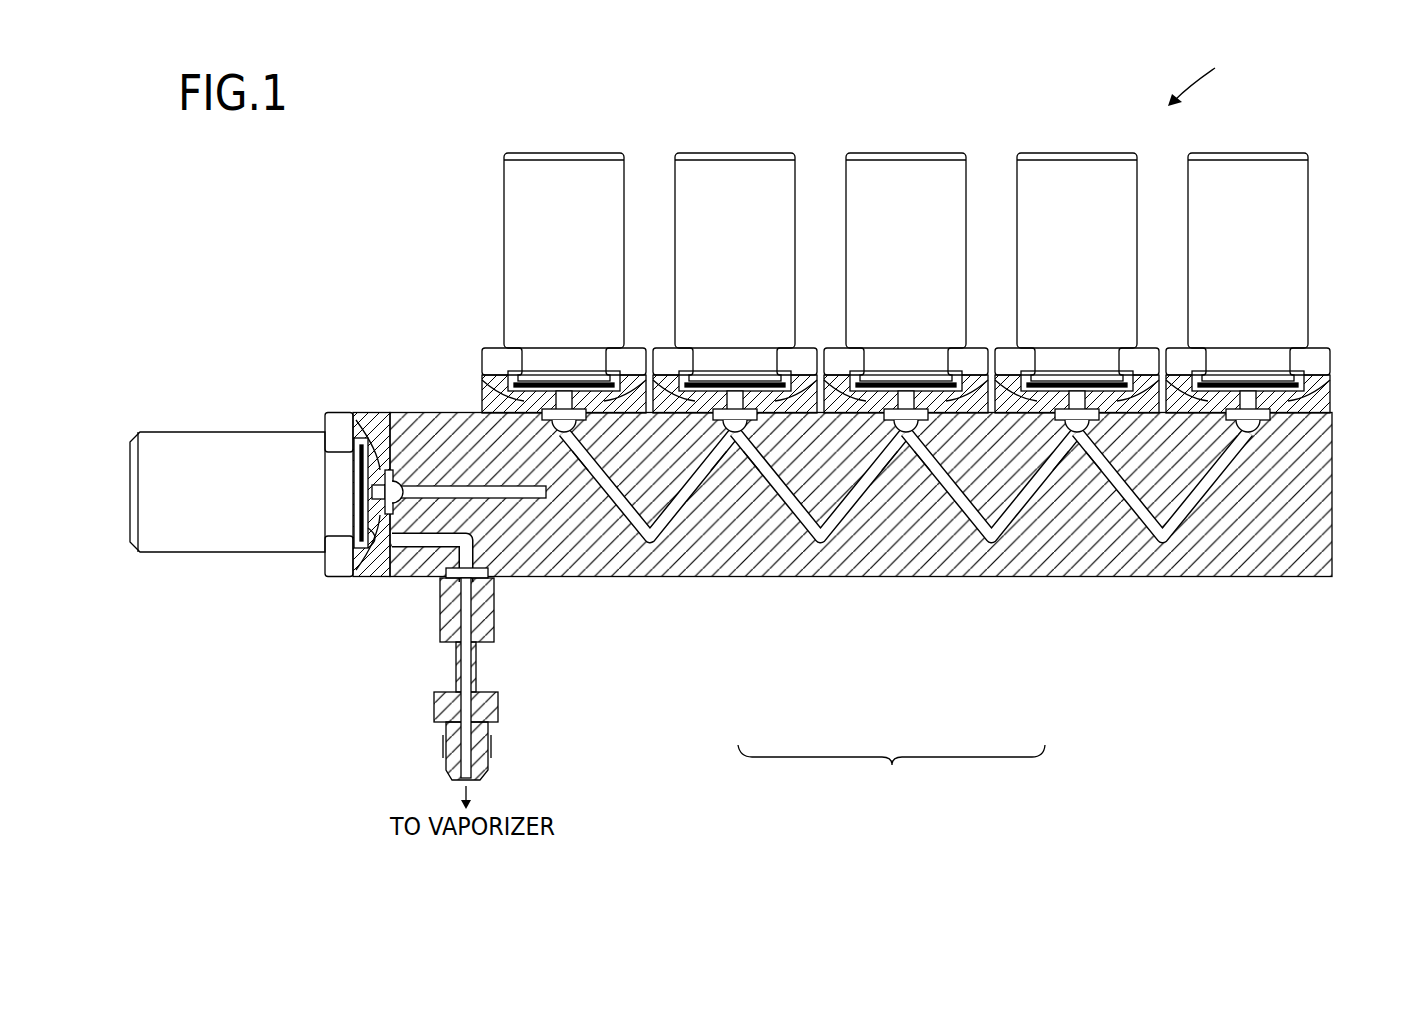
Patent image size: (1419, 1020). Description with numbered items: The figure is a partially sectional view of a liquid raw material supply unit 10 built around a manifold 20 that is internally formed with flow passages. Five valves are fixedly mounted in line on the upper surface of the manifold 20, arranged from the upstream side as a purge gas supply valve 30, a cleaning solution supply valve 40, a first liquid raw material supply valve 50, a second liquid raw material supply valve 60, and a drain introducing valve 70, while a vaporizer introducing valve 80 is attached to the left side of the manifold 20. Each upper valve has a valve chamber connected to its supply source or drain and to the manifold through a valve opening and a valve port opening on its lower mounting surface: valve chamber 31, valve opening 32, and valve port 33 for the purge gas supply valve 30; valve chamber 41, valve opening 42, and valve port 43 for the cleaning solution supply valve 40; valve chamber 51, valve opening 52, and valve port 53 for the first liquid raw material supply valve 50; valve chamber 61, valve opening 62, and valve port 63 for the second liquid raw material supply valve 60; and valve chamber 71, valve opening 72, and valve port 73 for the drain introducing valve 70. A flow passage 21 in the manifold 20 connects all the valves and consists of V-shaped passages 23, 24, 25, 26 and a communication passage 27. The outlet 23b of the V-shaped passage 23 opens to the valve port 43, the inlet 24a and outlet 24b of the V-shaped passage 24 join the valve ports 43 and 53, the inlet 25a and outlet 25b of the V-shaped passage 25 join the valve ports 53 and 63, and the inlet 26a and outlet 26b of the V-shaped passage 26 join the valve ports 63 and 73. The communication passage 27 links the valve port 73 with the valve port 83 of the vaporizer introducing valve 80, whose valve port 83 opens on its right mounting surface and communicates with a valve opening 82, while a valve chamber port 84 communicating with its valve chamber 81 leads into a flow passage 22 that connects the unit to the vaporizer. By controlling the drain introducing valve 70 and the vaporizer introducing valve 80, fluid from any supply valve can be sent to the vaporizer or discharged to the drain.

The liquid raw material supply unit 10 is at (1258, 66).
The manifold 20 is at (1332, 528).
The flow passage 21 is at (891, 771).
The flow passage 22 is at (413, 547).
The V-shaped passage 23 is at (1181, 533).
The outlet 23b is at (1083, 450).
The V-shaped passage 24 is at (1023, 500).
The inlet 24a is at (1070, 448).
The outlet 24b is at (918, 450).
The V-shaped passage 25 is at (846, 507).
The inlet 25a is at (893, 448).
The outlet 25b is at (748, 450).
The V-shaped passage 26 is at (672, 512).
The inlet 26a is at (722, 448).
The outlet 26b is at (578, 468).
The communication passage 27 is at (522, 485).
The purge gas supply valve 30 is at (1248, 235).
The valve chamber 31 is at (1293, 384).
The valve opening 32 is at (1306, 411).
The valve port 33 is at (1271, 415).
The cleaning solution supply valve 40 is at (1077, 235).
The valve chamber 41 is at (1098, 319).
The valve opening 42 is at (1041, 364).
The valve port 43 is at (1086, 353).
The first liquid raw material supply valve 50 is at (906, 235).
The valve chamber 51 is at (887, 309).
The valve opening 52 is at (943, 317).
The valve port 53 is at (914, 333).
The second liquid raw material supply valve 60 is at (735, 235).
The valve chamber 61 is at (714, 313).
The valve opening 62 is at (693, 361).
The valve port 63 is at (739, 357).
The drain introducing valve 70 is at (564, 235).
The valve chamber 71 is at (529, 359).
The valve opening 72 is at (503, 395).
The valve port 73 is at (533, 394).
The vaporizer introducing valve 80 is at (133, 487).
The valve chamber 81 is at (370, 549).
The valve opening 82 is at (368, 450).
The valve port 83 is at (380, 484).
The valve chamber port 84 is at (378, 535).